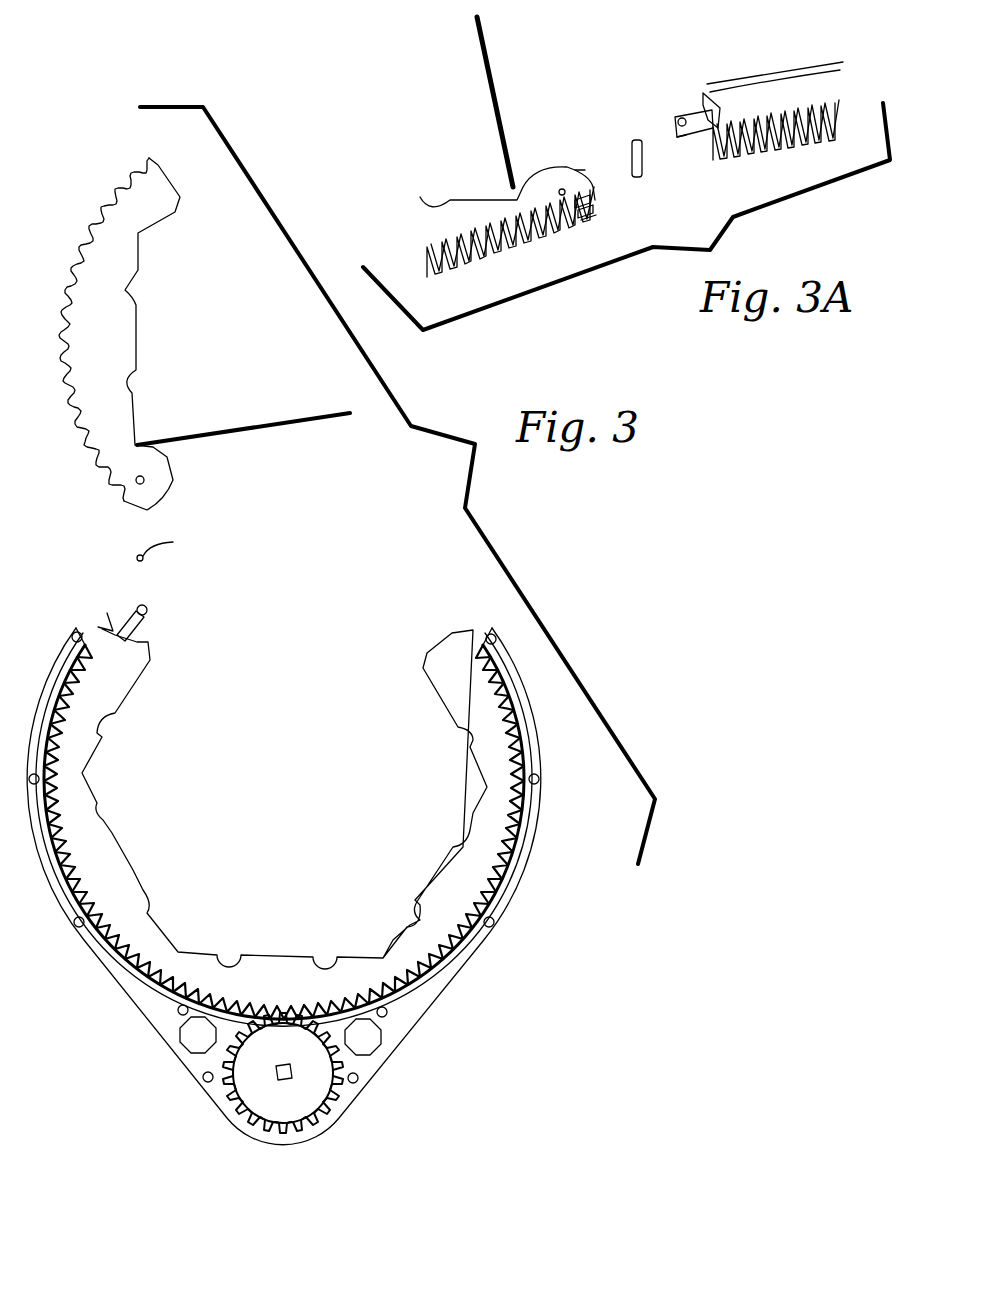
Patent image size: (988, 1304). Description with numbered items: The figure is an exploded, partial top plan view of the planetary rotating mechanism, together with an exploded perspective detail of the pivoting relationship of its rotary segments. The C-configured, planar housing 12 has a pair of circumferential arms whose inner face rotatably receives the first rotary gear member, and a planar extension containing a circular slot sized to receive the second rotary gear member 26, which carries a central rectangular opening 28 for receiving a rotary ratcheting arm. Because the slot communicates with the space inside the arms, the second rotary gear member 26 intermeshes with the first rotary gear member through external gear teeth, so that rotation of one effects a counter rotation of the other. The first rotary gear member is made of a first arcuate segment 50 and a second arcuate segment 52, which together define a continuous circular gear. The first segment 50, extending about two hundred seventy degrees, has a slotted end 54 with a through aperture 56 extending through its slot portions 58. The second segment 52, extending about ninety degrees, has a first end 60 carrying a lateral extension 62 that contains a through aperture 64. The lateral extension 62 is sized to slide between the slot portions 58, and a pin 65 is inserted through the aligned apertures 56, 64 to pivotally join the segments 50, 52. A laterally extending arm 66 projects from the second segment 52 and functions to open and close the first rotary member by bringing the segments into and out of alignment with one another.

In FIG. 3, the planar housing 12 is at (490, 943).
In FIG. 3, the second rotary gear member 26 is at (347, 1107).
In FIG. 3, the central rectangular opening 28 is at (277, 1082).
In FIG. 3, the first arcuate segment 50 is at (117, 893).
In FIG. 3A, the first arcuate segment 50 is at (765, 97).
In FIG. 3, the second arcuate segment 52 is at (100, 292).
In FIG. 3A, the second arcuate segment 52 is at (480, 220).
In FIG. 3A, the slotted end 54 is at (580, 167).
In FIG. 3A, the through aperture 56 is at (562, 192).
In FIG. 3A, the slot portions 58 is at (596, 197).
In FIG. 3A, the first end 60 is at (707, 93).
In FIG. 3, the lateral extension 62 is at (146, 622).
In FIG. 3A, the lateral extension 62 is at (686, 128).
In FIG. 3A, the through aperture 64 is at (680, 110).
In FIG. 3, the pin 65 is at (173, 542).
In FIG. 3A, the pin 65 is at (627, 150).
In FIG. 3A, the laterally extending arm 66 is at (487, 47).